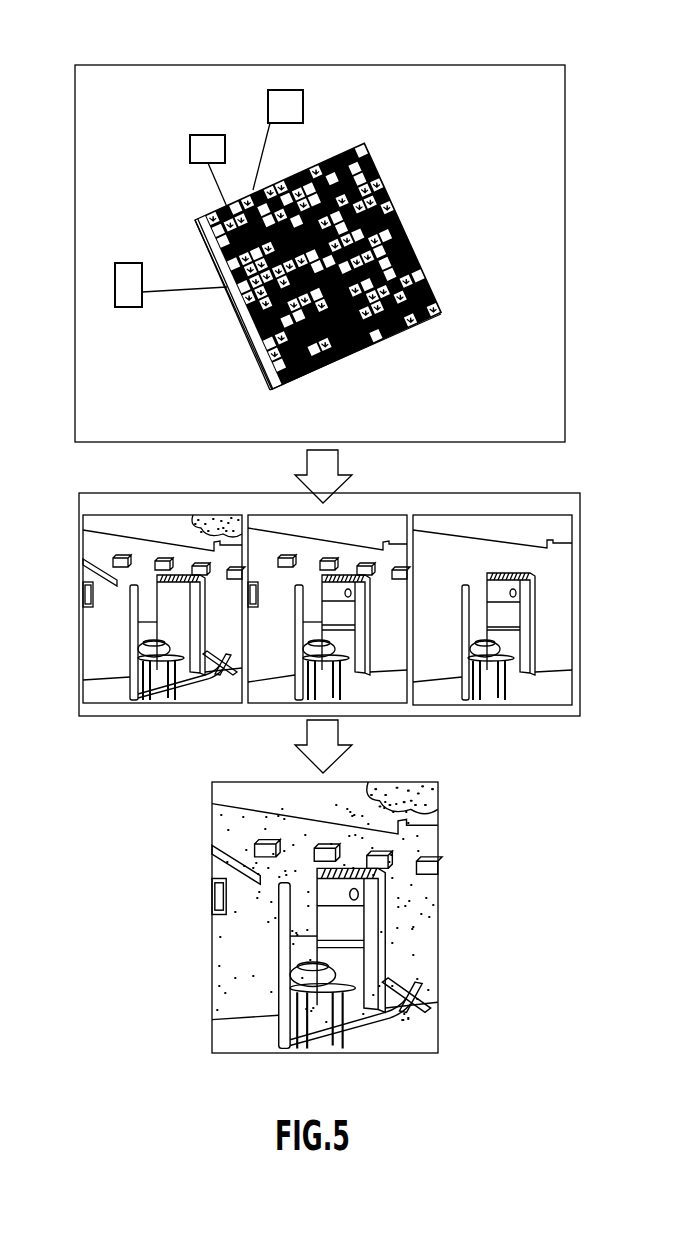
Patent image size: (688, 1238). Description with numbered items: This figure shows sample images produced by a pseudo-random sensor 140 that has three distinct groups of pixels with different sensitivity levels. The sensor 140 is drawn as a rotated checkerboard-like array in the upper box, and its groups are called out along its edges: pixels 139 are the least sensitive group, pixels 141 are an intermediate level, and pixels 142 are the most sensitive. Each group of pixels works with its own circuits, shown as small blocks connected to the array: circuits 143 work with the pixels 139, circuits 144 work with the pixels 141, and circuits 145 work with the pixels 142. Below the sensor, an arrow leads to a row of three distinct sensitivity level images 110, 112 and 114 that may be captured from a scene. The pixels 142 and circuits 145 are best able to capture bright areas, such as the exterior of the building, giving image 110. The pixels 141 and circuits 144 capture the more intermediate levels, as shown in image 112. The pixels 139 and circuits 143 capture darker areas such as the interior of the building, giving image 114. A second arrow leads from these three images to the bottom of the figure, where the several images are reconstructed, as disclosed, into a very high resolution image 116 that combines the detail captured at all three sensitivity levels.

The sensitivity level image 110 is at (118, 705).
The sensitivity level image 112 is at (380, 515).
The sensitivity level image 114 is at (507, 717).
The high resolution image 116 is at (417, 937).
The pixels 139 is at (252, 355).
The sensor 140 is at (415, 212).
The pixels 141 is at (240, 327).
The pixels 142 is at (308, 375).
The circuits 143 is at (207, 145).
The circuits 144 is at (127, 277).
The circuits 145 is at (283, 103).